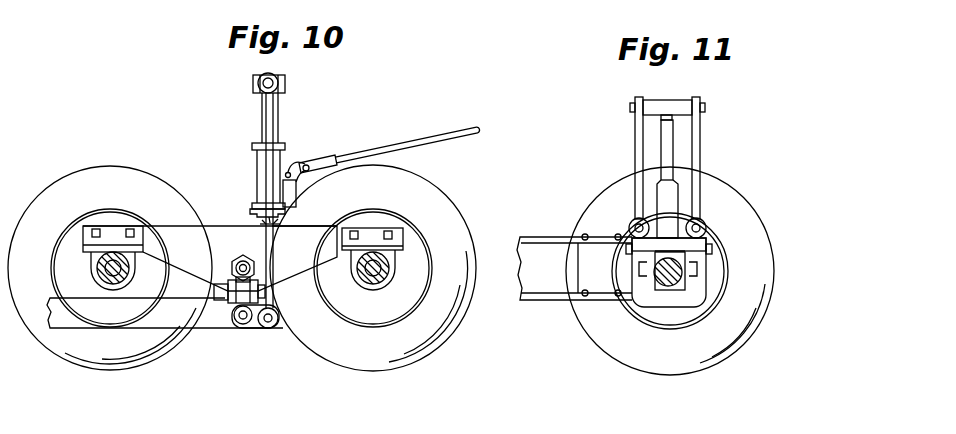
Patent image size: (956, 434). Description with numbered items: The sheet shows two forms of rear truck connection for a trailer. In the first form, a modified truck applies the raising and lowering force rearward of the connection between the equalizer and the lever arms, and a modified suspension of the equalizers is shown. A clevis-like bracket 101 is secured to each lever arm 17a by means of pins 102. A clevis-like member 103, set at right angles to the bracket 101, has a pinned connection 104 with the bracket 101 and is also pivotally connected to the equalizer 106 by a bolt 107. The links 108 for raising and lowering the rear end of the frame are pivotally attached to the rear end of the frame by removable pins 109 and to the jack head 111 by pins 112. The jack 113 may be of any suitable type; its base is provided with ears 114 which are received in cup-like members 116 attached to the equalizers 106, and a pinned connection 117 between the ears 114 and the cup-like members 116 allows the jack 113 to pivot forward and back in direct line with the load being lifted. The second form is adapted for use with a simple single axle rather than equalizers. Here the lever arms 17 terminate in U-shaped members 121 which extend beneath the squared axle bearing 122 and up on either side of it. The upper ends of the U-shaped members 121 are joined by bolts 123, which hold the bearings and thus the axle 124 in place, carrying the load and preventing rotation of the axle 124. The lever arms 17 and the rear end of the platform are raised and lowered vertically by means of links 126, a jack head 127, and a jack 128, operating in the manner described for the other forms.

In FIG. 11, the lever arm 17 is at (533, 288).
In FIG. 10, the lever arm 17a is at (165, 316).
In FIG. 10, the clevis-like bracket 101 is at (238, 323).
In FIG. 10, the pins 102 is at (249, 306).
In FIG. 10, the clevis-like member 103 is at (237, 262).
In FIG. 10, the pinned connection 104 is at (220, 302).
In FIG. 10, the equalizer 106 is at (291, 272).
In FIG. 10, the bolt 107 is at (242, 256).
In FIG. 10, the links 108 is at (308, 160).
In FIG. 10, the removable pins 109 is at (272, 328).
In FIG. 10, the jack head 111 is at (287, 90).
In FIG. 10, the pins 112 is at (276, 85).
In FIG. 10, the jack 113 is at (270, 166).
In FIG. 10, the ears 114 is at (279, 222).
In FIG. 10, the cup-like members 116 is at (281, 225).
In FIG. 10, the pinned connection 117 is at (279, 229).
In FIG. 11, the U-shaped members 121 is at (642, 292).
In FIG. 11, the squared axle bearing 122 is at (658, 285).
In FIG. 11, the bolts 123 is at (664, 248).
In FIG. 11, the axle 124 is at (680, 285).
In FIG. 11, the links 126 is at (637, 152).
In FIG. 11, the jack head 127 is at (676, 104).
In FIG. 11, the jack 128 is at (660, 195).